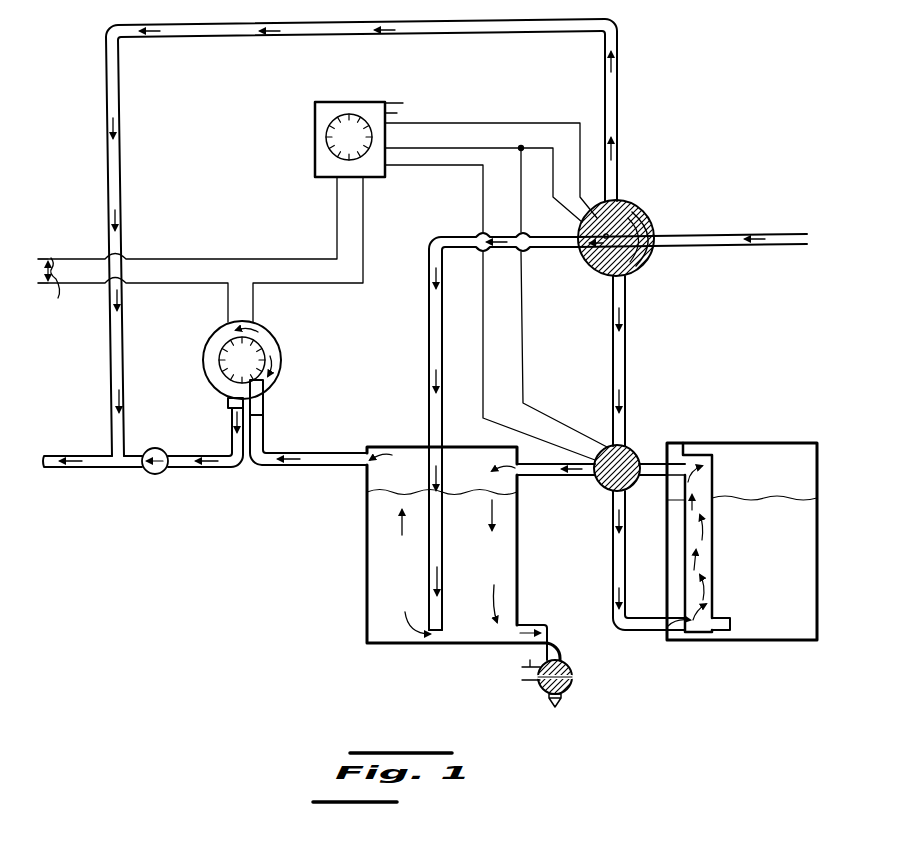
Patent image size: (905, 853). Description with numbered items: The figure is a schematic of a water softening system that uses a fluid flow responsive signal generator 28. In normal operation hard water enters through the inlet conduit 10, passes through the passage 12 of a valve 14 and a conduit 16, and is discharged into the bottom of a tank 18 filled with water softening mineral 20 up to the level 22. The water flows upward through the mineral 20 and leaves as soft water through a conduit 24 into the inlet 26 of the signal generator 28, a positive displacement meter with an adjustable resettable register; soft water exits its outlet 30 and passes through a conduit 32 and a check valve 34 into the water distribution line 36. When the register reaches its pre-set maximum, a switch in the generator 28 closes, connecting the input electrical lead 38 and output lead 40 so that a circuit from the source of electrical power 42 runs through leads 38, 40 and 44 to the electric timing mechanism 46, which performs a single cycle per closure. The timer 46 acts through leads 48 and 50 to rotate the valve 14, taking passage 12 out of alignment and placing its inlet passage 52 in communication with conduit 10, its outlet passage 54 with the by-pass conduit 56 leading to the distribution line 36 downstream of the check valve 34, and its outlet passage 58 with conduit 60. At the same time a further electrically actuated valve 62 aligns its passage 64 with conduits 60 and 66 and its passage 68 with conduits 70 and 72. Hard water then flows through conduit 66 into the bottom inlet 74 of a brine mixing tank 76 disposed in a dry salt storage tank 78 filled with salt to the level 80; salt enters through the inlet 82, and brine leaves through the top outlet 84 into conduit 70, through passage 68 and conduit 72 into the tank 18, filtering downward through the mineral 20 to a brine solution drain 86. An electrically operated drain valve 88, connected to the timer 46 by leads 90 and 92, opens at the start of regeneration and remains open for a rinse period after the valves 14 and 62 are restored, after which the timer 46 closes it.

The inlet conduit 10 is at (705, 234).
The passage 12 is at (609, 237).
The valve 14 is at (649, 220).
The conduit 16 is at (428, 324).
The tank 18 is at (366, 538).
The water softening mineral 20 is at (366, 594).
The level 22 is at (364, 491).
The conduit 24 is at (338, 452).
The inlet 26 is at (264, 409).
The flow responsive signal generator 28 is at (280, 362).
The outlet 30 is at (228, 402).
The conduit 32 is at (215, 453).
The check valve 34 is at (157, 475).
The water distribution line 36 is at (92, 468).
The input electrical lead 38 is at (227, 306).
The output lead 40 is at (254, 302).
The source of electrical power 42 is at (63, 284).
The lead 44 is at (203, 258).
The electric timing mechanism 46 is at (315, 139).
The lead 48 is at (550, 127).
The lead 50 is at (533, 140).
The inlet passage 52 is at (647, 265).
The outlet passage 54 is at (640, 211).
The conduit 56 is at (620, 170).
The outlet passage 58 is at (592, 272).
The conduit 60 is at (626, 362).
The electrically actuated valve 62 is at (630, 450).
The passage 64 is at (652, 455).
The conduit 66 is at (612, 520).
The passage 68 is at (628, 495).
The conduit 70 is at (634, 479).
The conduit 72 is at (560, 478).
The bottom inlet 74 is at (684, 632).
The brine mixing tank 76 is at (714, 547).
The dry salt storage tank 78 is at (752, 641).
The level 80 is at (756, 497).
The inlet 82 is at (720, 618).
The outlet 84 is at (683, 453).
The brine solution drain 86 is at (566, 660).
The drain valve 88 is at (574, 682).
The lead 90 is at (403, 103).
The lead 92 is at (397, 113).